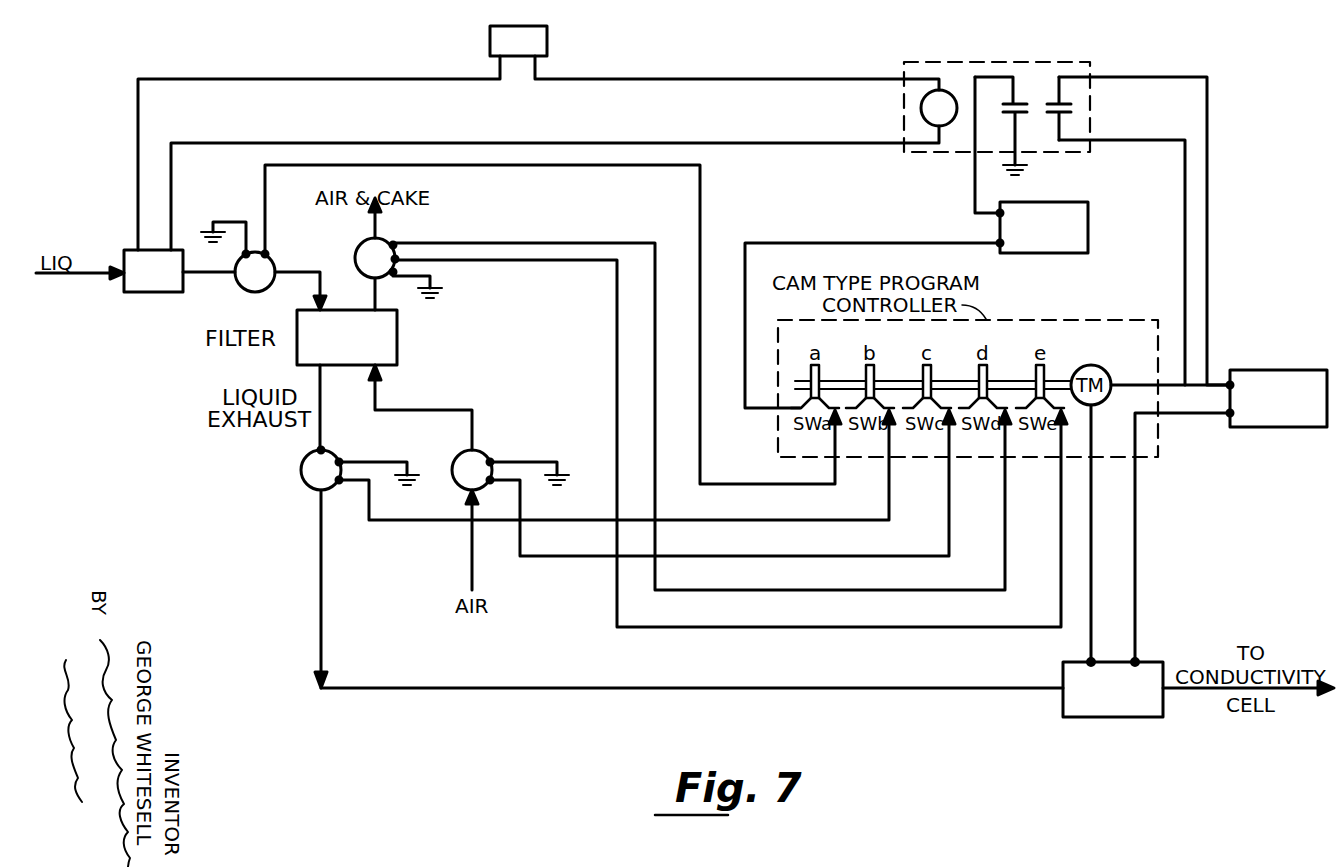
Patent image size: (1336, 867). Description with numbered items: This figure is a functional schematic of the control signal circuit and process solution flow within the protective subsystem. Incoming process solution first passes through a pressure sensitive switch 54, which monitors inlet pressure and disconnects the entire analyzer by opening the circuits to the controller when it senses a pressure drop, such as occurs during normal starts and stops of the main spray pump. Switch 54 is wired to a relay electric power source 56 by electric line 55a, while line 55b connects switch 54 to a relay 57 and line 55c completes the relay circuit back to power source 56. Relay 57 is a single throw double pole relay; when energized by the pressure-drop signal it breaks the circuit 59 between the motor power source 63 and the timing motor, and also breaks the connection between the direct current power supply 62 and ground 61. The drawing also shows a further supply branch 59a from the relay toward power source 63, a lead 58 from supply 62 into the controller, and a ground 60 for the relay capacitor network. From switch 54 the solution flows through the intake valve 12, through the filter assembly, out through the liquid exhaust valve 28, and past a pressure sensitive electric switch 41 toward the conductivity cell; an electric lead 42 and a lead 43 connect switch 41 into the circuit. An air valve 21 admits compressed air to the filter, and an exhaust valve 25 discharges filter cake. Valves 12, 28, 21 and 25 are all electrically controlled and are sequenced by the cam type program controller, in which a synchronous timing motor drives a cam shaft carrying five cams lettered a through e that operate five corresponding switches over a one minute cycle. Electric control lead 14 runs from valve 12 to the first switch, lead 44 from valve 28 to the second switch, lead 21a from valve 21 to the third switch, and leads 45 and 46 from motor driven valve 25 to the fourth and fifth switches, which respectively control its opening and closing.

The intake valve 12 is at (242, 288).
The electric control lead 14 is at (700, 192).
The air valve 21 is at (456, 448).
The electrical lead 21a is at (584, 556).
The exhaust valve 25 is at (356, 248).
The analysis system valve 28 is at (301, 482).
The pressure sensitive electric switch 41 is at (1062, 706).
The electric lead 42 is at (1090, 640).
The lead from unit 63 to unit 41 43 is at (1135, 564).
The electrical control lead 44 is at (403, 523).
The electrical control lead 45 is at (562, 242).
The electrical control lead 46 is at (550, 261).
The pressure sensitive switch 54 is at (150, 292).
The electric line 55a is at (297, 79).
The electric line 55b is at (414, 143).
The electric line 55c is at (724, 79).
The relay electric power source 56 is at (548, 40).
The relay 57 is at (1030, 62).
The line from unit 62 to controller 58 is at (855, 243).
The circuit 59 is at (1184, 202).
The line to unit 63 59a is at (1208, 204).
The ground connection 60 is at (1024, 160).
The ground 61 is at (974, 180).
The direct current power supply 62 is at (1088, 248).
The motor power source 63 is at (1280, 427).